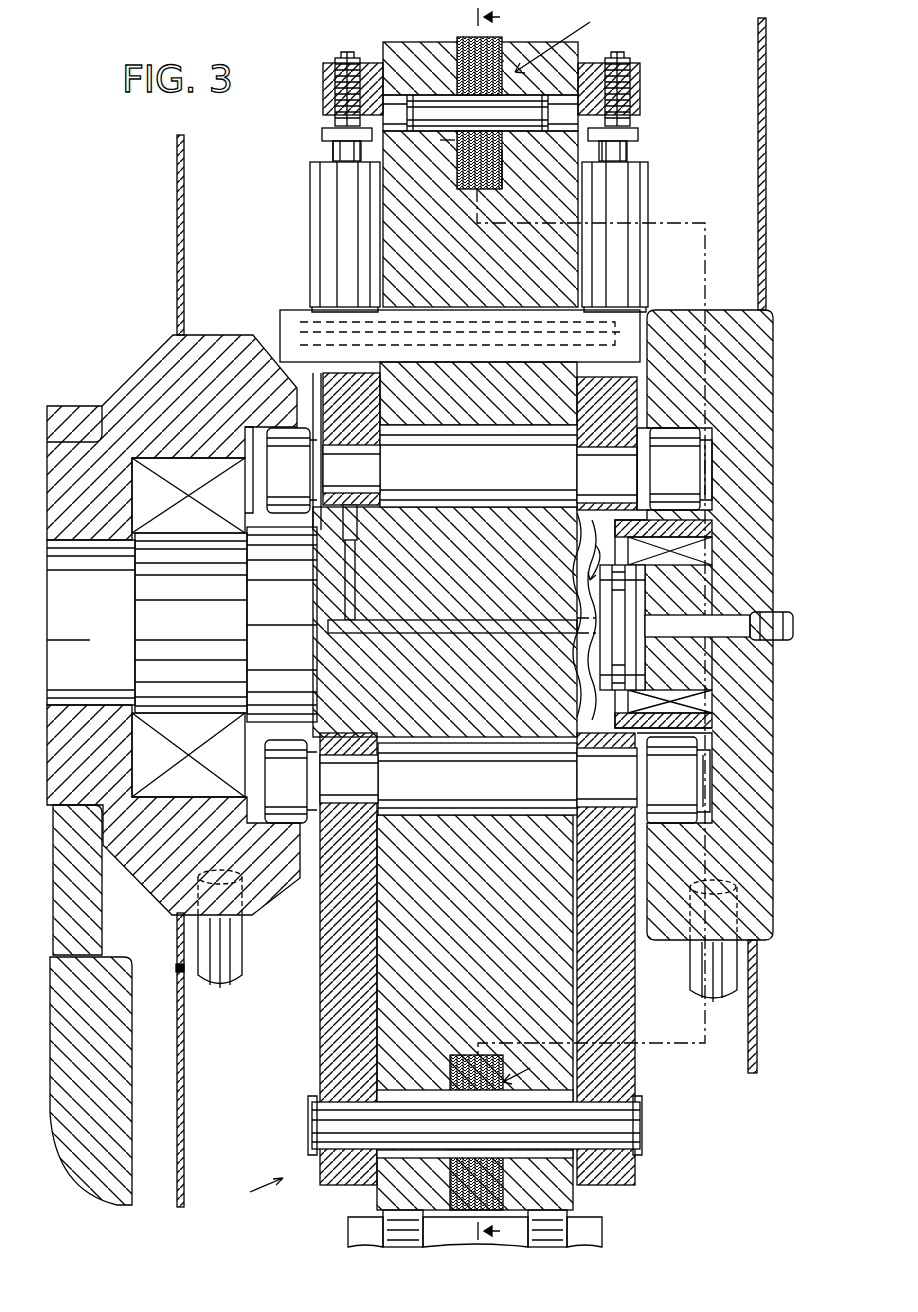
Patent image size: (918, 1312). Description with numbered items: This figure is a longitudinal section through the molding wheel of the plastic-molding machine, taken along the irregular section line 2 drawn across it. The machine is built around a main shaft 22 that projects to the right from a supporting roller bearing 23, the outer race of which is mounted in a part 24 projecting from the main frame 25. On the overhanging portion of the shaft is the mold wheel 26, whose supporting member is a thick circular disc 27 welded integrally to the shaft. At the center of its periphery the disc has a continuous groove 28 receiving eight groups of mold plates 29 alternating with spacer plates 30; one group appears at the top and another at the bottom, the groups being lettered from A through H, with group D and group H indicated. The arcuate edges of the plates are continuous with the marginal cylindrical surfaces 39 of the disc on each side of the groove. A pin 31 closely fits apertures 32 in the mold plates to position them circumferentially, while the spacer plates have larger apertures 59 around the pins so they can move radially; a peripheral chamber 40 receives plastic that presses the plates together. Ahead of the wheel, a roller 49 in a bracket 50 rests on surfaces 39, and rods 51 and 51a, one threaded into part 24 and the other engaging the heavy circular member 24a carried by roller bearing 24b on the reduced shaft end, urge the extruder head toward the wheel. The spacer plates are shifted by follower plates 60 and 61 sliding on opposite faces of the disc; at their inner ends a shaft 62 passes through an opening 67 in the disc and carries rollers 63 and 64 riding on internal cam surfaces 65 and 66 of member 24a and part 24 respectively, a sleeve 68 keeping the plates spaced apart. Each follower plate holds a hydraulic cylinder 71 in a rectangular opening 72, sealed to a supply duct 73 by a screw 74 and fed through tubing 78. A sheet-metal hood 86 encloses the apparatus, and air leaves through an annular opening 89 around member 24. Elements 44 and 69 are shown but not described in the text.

The main shaft 22 is at (190, 621).
The supporting roller bearing 23 is at (190, 462).
The part 24 is at (145, 385).
The heavy circular member 24a is at (765, 316).
The roller bearing 24b is at (712, 554).
The main frame 25 is at (88, 918).
The mold wheel 26 is at (248, 1191).
The thick circular disc 27 is at (490, 954).
The continuous groove 28 is at (500, 188).
The mold plates 29 is at (455, 160).
The spacer plates 30 is at (505, 170).
The pin 31 is at (430, 100).
The apertures 32 is at (460, 96).
The cylindrical surfaces 39 is at (402, 42).
The peripheral chamber 40 is at (507, 52).
The friction pad 44 is at (457, 40).
The roller 49 is at (556, 1222).
The bracket 50 is at (352, 1222).
The rod 51 is at (232, 950).
The rod 51a is at (730, 978).
The apertures 59 is at (455, 138).
The follower plate 60 is at (640, 103).
The follower plate 61 is at (325, 95).
The shaft 62 is at (617, 476).
The roller 63 is at (682, 466).
The roller 64 is at (302, 468).
The internal cam surface 65 is at (665, 426).
The internal cam surface 66 is at (245, 430).
The opening 67 is at (400, 492).
The sleeve 68 is at (488, 472).
The roller shaft 69 is at (620, 1128).
The hydraulic cylinder 71 is at (330, 224).
The rectangular opening 72 is at (322, 132).
The supply duct 73 is at (340, 305).
The screw 74 is at (338, 68).
The tubing 78 is at (775, 616).
The hood 86 is at (183, 1078).
The annular opening 89 is at (176, 966).
The section line 2 is at (498, 627).
The group of mold and spacer plates D is at (559, 36).
The group of mold and spacer plates H is at (524, 1064).